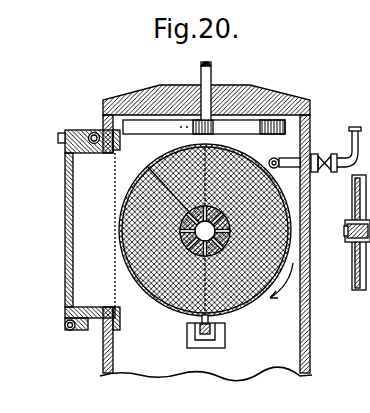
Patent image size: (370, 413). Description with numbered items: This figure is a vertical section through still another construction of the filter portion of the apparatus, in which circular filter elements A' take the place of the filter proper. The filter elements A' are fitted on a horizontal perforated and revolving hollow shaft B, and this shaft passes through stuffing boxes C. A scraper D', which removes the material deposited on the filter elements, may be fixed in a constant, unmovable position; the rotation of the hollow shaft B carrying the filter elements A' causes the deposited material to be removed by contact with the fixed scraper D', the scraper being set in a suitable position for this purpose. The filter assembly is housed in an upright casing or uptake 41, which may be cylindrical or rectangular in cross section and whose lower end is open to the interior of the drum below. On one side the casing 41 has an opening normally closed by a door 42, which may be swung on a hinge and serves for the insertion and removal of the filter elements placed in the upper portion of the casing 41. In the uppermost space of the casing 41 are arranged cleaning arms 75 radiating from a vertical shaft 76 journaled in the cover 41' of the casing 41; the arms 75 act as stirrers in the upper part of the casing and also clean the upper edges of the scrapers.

The casing 41 is at (234, 248).
The cover 41' is at (206, 87).
The door 42 is at (65, 181).
The cleaning arms 75 is at (268, 122).
The vertical shaft 76 is at (212, 72).
The hollow shaft B is at (152, 176).
The circular filter elements A' is at (205, 239).
The scraper D' is at (224, 330).
The stuffing boxes C is at (366, 297).